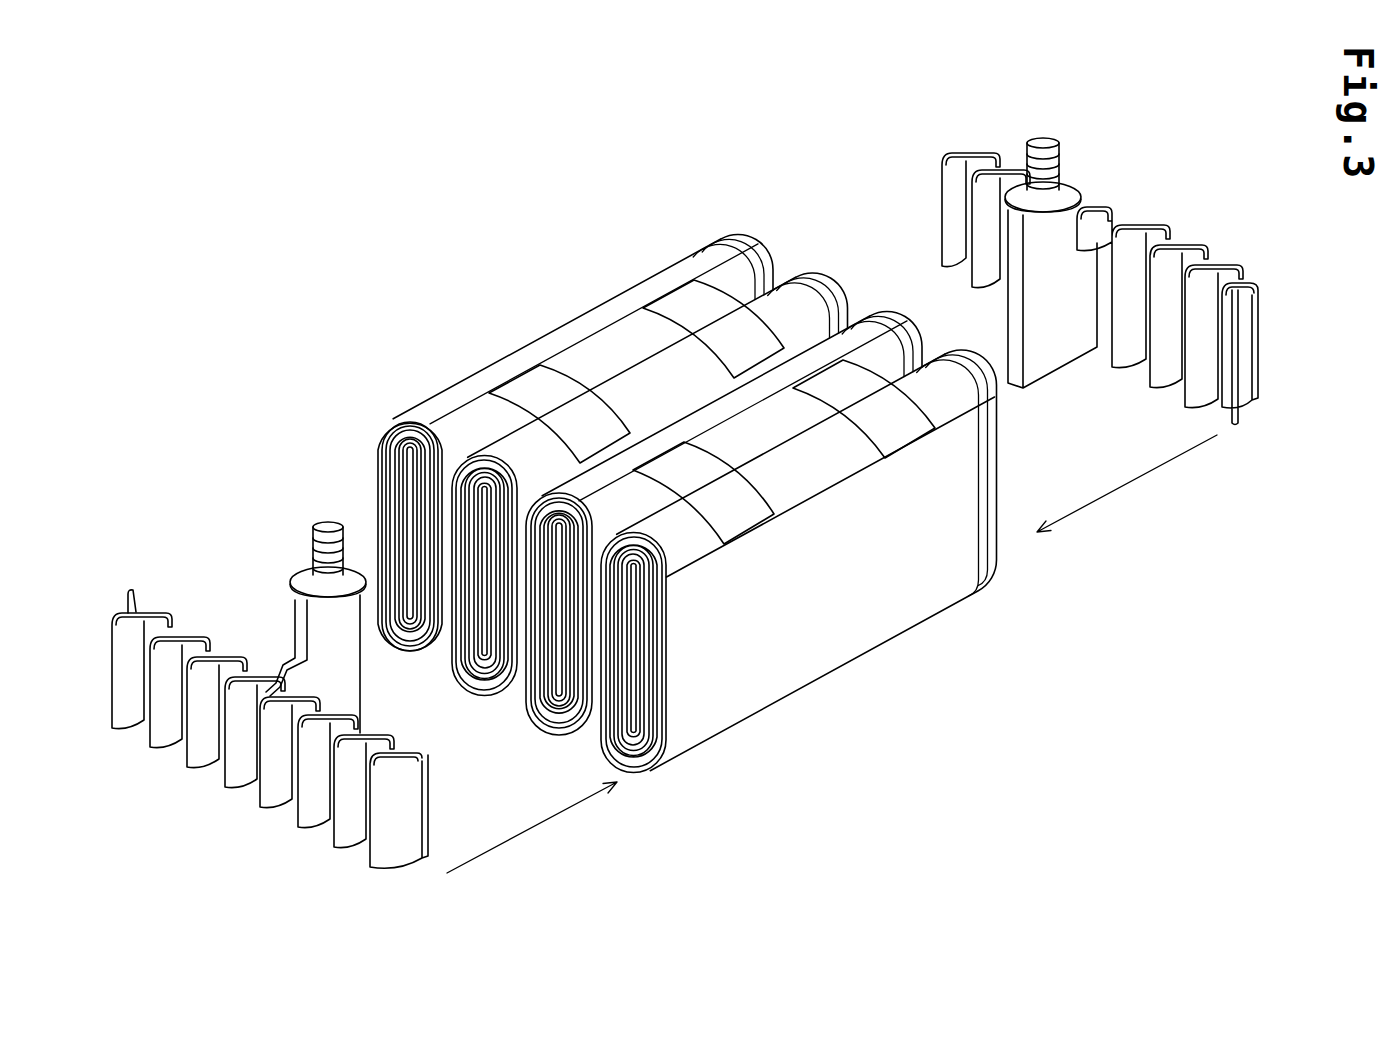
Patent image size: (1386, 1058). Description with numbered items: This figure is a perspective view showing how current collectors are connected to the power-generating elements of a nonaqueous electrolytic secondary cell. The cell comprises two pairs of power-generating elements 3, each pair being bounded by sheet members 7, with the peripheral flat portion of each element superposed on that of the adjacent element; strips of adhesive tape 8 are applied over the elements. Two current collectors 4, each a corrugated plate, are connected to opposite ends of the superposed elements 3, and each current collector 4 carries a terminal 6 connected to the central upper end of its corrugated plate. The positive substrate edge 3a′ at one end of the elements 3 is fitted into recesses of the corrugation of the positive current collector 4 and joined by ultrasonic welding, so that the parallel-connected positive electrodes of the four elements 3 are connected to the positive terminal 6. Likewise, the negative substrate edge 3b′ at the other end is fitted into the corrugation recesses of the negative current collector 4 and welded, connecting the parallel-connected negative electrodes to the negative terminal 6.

The power-generating element 3 is at (740, 240).
The positive substrate edge 3a′ is at (652, 772).
The negative substrate edge 3b′ is at (997, 553).
The current collector 4 is at (227, 772).
The terminal 6 is at (310, 553).
The sheet member 7 is at (587, 322).
The adhesive tape 8 is at (528, 380).